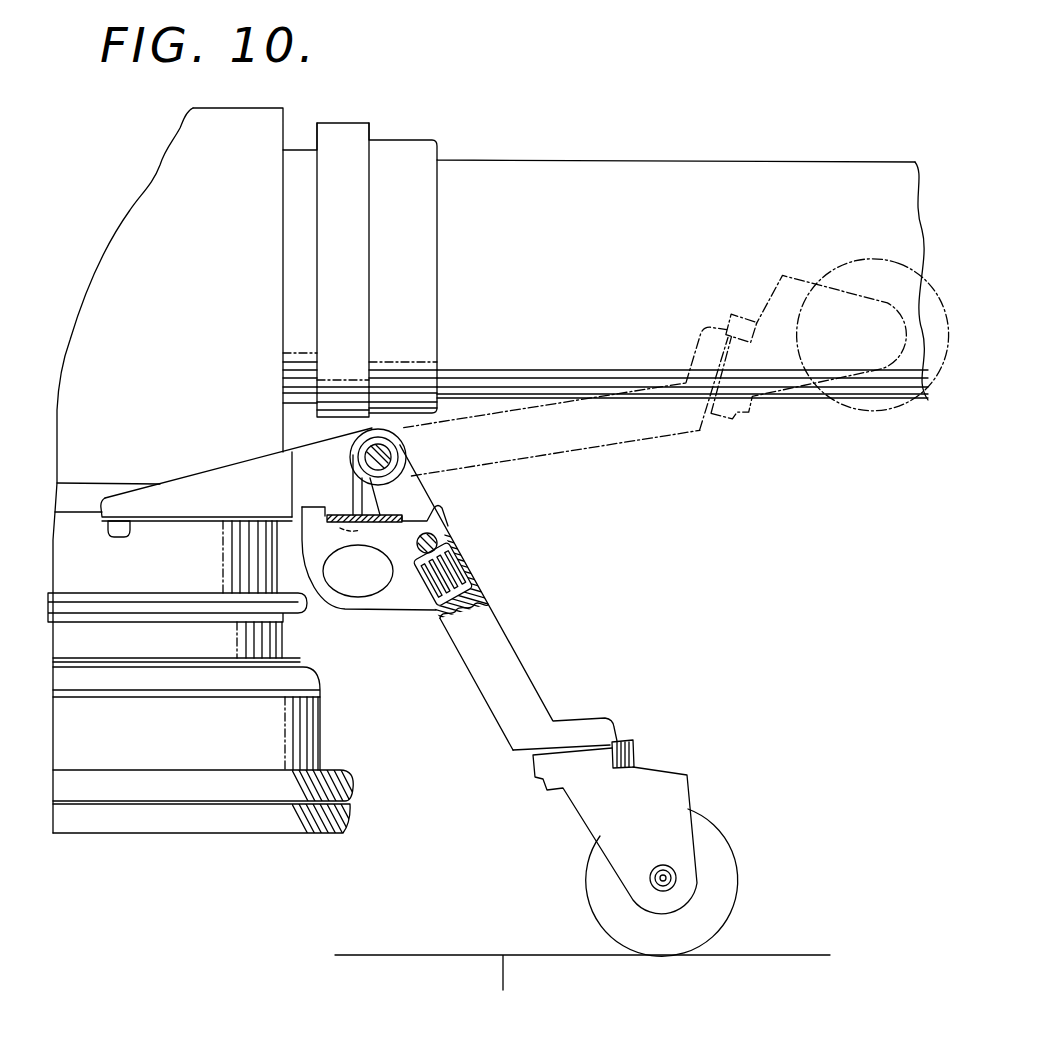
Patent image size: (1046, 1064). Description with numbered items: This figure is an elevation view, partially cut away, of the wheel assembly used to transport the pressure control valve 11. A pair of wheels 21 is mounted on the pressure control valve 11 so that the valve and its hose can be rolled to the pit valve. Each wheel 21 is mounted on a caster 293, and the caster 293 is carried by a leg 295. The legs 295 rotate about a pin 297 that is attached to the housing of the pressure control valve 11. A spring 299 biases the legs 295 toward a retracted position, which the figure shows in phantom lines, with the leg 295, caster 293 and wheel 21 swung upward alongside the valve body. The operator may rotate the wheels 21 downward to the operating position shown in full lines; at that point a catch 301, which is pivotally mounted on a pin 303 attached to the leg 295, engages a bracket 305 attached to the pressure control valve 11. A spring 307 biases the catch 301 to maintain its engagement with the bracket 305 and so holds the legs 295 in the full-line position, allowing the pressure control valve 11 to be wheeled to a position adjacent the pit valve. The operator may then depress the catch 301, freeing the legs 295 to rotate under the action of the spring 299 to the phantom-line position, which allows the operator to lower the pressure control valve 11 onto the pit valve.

The pressure control valve 11 is at (156, 191).
The wheels 21 is at (722, 837).
The casters 293 is at (633, 752).
The legs 295 is at (510, 656).
The pin 297 is at (394, 447).
The spring 299 is at (399, 463).
The catch 301 is at (397, 605).
The pin 303 is at (437, 542).
The bracket 305 is at (330, 512).
The spring 307 is at (468, 571).